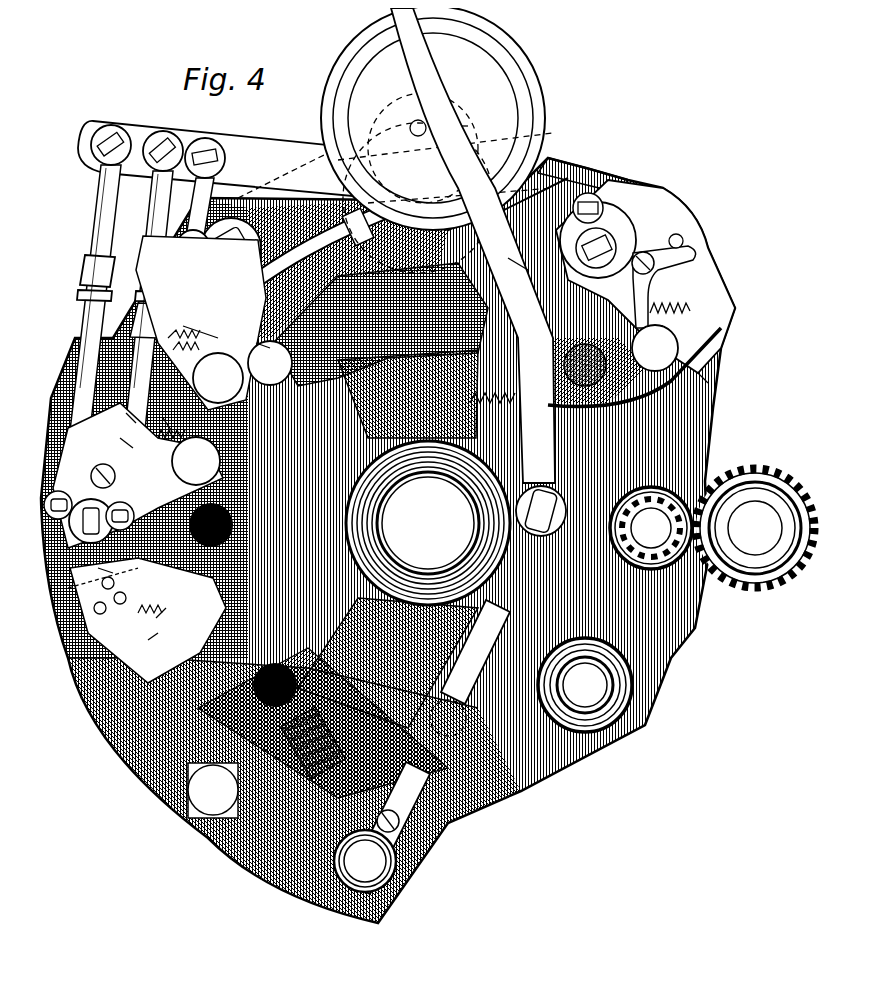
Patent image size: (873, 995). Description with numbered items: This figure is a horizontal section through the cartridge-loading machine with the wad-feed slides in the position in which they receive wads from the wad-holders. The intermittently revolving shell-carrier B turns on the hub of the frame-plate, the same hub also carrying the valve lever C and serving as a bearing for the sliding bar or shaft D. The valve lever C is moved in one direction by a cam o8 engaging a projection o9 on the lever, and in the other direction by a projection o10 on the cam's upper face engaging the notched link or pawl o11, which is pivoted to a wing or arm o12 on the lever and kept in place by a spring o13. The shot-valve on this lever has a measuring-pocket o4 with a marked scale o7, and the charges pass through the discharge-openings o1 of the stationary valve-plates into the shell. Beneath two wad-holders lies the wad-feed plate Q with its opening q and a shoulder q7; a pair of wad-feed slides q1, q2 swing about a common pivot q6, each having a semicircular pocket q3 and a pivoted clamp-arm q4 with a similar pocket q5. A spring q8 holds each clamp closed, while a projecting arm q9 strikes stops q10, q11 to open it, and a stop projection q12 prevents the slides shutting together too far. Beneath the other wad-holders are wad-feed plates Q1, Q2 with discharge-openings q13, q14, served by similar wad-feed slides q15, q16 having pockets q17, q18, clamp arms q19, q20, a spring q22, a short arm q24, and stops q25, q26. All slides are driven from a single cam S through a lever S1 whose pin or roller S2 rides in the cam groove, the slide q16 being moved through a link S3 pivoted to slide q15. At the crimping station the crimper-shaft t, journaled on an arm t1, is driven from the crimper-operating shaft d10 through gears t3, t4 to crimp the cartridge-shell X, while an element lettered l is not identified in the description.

The shell-carrier B is at (690, 640).
The cam S is at (98, 208).
The lever S1 is at (150, 196).
The pin or roller S2 is at (520, 140).
The link S3 is at (523, 200).
The opening q is at (518, 255).
The wad-feed slide q1 is at (149, 641).
The wad-feed slide q2 is at (196, 185).
The semicircular pocket q3 is at (235, 425).
The clamp-arm q4 is at (188, 540).
The semicircular receptacle or pocket q5 is at (138, 508).
The pivot q6 is at (89, 517).
The shoulder q7 is at (147, 620).
The spring q8 is at (140, 511).
The projecting arm q9 is at (121, 438).
The stop q10 is at (98, 563).
The stop q11 is at (125, 413).
The stop projection q12 is at (154, 615).
The discharge-opening q13 is at (270, 363).
The discharge-opening q14 is at (700, 372).
The wad-feed slide q15 is at (186, 350).
The wad-feed slide q16 is at (672, 348).
The pocket q17 is at (201, 323).
The pocket q18 is at (640, 340).
The clamp arm q19 is at (192, 330).
The clamp arm q20 is at (668, 325).
The spring q22 is at (685, 293).
The short arm q24 is at (680, 250).
The stop q25 is at (78, 262).
The stop q26 is at (676, 230).
The wad-feed plate Q is at (233, 686).
The wad-feed plate Q1 is at (255, 339).
The wad-feed plate Q2 is at (680, 388).
The discharge-openings o1 is at (380, 324).
The measuring-pocket o4 is at (418, 198).
The marked scale o7 is at (416, 121).
The cam o8 is at (445, 153).
The projection o9 is at (460, 185).
The projection o10 is at (420, 148).
The notched link or pawl o11 is at (457, 133).
The wing or arm o12 is at (515, 478).
The spring o13 is at (497, 380).
The valve lever C is at (388, 539).
The sliding bar or shaft D is at (428, 523).
The revolving shaft t is at (628, 640).
The arm t1 is at (365, 861).
The gear t3 is at (755, 458).
The gear t4 is at (513, 696).
The crimper-operating shaft d10 is at (755, 528).
The cartridge-shell X is at (585, 685).
The lever l is at (470, 668).